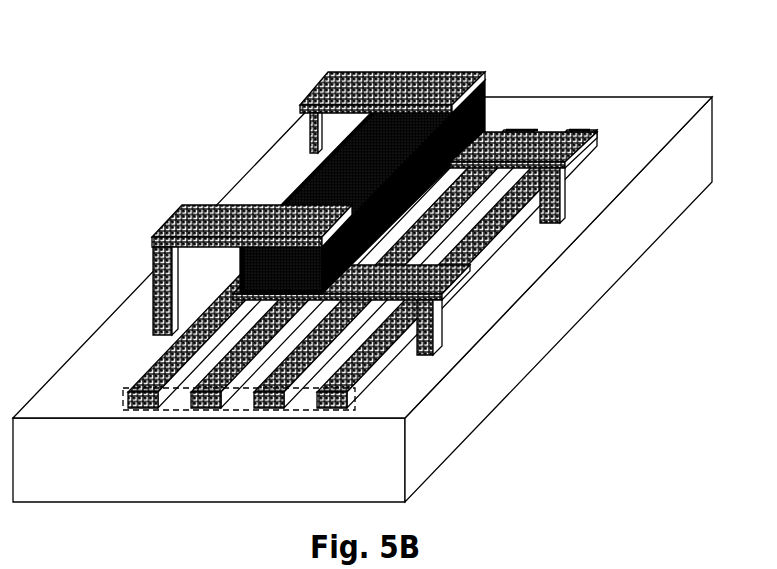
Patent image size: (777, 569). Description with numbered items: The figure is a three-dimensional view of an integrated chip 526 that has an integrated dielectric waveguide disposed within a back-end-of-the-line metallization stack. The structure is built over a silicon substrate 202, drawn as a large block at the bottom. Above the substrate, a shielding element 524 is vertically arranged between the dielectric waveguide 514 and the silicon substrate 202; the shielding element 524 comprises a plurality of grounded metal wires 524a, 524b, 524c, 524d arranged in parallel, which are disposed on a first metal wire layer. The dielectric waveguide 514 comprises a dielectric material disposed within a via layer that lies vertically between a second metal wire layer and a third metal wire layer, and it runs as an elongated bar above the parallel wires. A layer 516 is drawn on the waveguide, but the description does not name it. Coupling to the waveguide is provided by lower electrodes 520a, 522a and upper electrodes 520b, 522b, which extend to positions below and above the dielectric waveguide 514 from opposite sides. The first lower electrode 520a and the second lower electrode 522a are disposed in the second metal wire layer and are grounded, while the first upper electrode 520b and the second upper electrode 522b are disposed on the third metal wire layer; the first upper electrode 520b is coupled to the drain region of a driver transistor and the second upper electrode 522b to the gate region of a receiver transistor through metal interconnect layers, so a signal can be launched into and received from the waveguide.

The silicon substrate 202 is at (714, 147).
The dielectric waveguide 514 is at (397, 130).
The gate dielectric / conductive layer 516 is at (486, 121).
The first lower electrode 520a is at (456, 285).
The first upper electrode 520b is at (248, 205).
The second lower electrode 522a is at (577, 152).
The second upper electrode 522b is at (368, 72).
The shielding element 524 is at (355, 407).
The grounded metal wire 524a is at (145, 408).
The grounded metal wire 524b is at (208, 408).
The grounded metal wire 524c is at (270, 408).
The grounded metal wire 524d is at (337, 408).
The integrated chip 526 is at (84, 38).